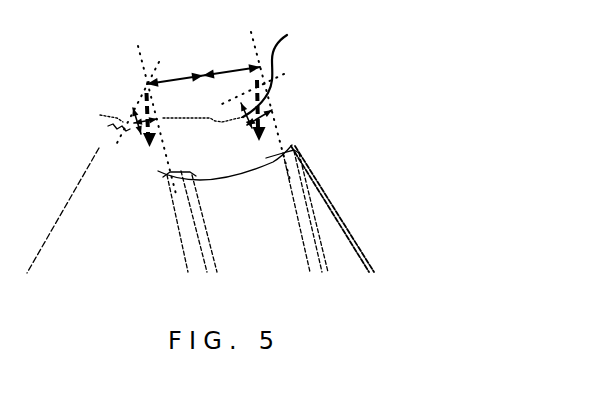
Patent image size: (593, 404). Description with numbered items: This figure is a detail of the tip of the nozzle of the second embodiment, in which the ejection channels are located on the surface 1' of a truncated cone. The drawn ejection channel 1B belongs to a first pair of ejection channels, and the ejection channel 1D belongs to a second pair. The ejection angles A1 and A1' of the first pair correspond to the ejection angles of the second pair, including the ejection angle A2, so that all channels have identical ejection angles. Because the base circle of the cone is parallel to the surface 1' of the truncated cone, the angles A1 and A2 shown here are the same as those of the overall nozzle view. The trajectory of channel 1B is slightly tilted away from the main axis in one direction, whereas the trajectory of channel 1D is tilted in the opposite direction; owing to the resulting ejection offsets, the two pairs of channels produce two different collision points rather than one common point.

The ejection angle A1' is at (85, 93).
The ejection angle A2 is at (270, 137).
The ejection angle A1 is at (86, 158).
The surface of the truncated cone 1' is at (92, 183).
The ejection channel 1B is at (176, 199).
The ejection channel 1D is at (297, 188).